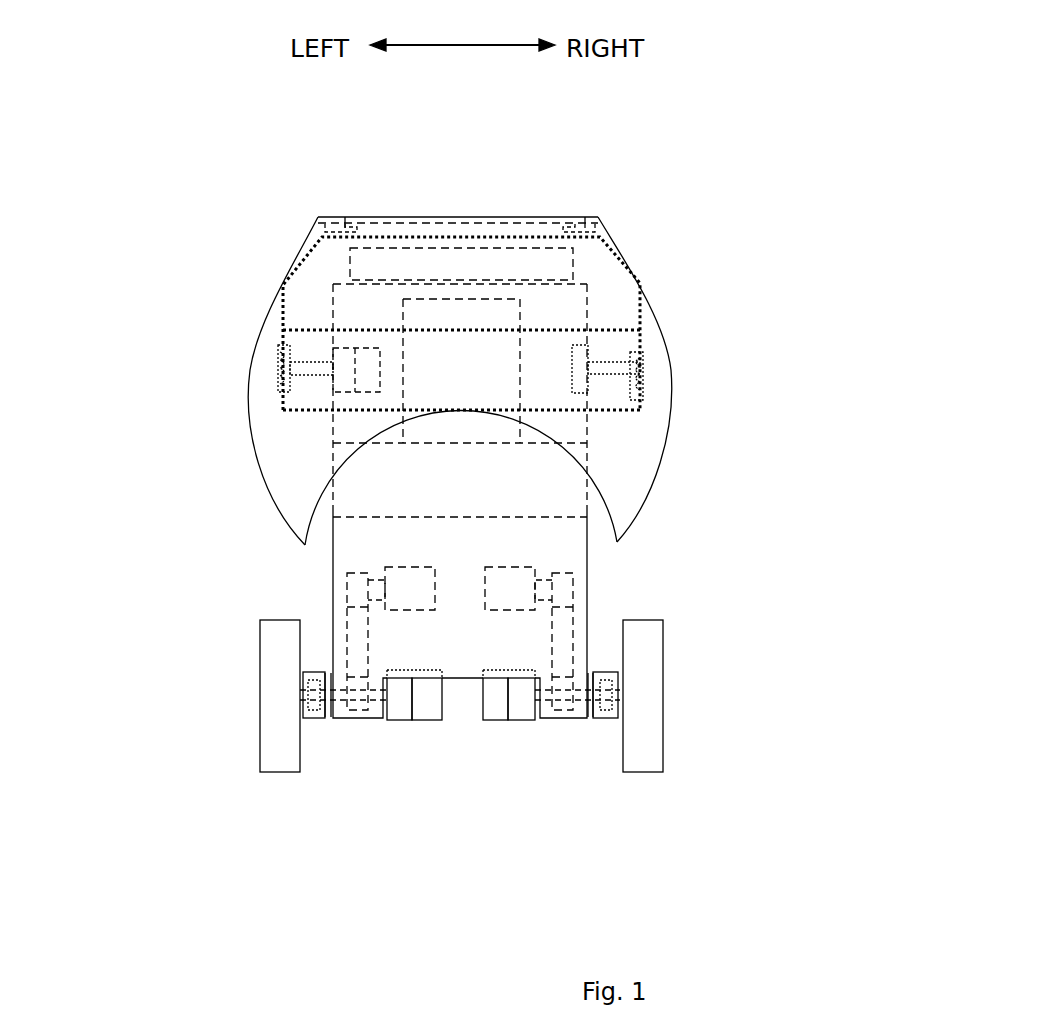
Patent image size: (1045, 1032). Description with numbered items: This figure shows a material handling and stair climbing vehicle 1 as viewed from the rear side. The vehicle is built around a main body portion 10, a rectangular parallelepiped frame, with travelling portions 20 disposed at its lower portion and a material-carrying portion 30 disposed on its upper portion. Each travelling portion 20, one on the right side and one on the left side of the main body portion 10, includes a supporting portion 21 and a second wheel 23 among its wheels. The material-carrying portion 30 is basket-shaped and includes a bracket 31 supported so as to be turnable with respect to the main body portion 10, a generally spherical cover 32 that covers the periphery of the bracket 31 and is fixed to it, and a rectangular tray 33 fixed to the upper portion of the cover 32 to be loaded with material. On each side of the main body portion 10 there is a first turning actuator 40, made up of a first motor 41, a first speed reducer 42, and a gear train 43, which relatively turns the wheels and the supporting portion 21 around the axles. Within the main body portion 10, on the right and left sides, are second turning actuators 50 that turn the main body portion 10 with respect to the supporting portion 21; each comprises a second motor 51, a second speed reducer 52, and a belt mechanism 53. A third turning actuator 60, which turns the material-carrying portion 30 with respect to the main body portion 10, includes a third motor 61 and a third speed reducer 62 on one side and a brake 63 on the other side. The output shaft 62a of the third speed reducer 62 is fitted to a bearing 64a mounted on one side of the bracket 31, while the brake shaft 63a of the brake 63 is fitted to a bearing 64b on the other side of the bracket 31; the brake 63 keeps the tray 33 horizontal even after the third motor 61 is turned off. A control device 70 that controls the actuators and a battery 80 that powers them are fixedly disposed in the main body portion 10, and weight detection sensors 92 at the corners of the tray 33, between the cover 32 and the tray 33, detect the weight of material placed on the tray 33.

The material handling and stair climbing vehicle 1 is at (674, 156).
The main body portion 10 is at (324, 530).
The travelling portions 20 is at (312, 840).
The supporting portion 21 is at (325, 720).
The second wheel 23 is at (276, 772).
The material-carrying portion 30 is at (247, 152).
The bracket 31 is at (312, 250).
The cover 32 is at (262, 325).
The tray 33 is at (318, 214).
The first turning actuator 40 is at (442, 840).
The first motor 41 is at (432, 720).
The first speed reducer 42 is at (400, 720).
The gear train 43 is at (318, 720).
The second turning actuator 50 is at (192, 560).
The second motor 51 is at (377, 586).
The second speed reducer 52 is at (418, 578).
The belt mechanism 53 is at (347, 625).
The third turning actuator 60 is at (163, 409).
The third motor 61 is at (278, 414).
The third speed reducer 62 is at (373, 387).
The output shaft 62a is at (322, 372).
The brake 63 is at (577, 345).
The brake shaft 63a is at (628, 346).
The bearing 64a is at (280, 365).
The bearing 64b is at (640, 378).
The control device 70 is at (410, 215).
The battery 80 is at (470, 312).
The weight detection sensor 92 is at (346, 214).